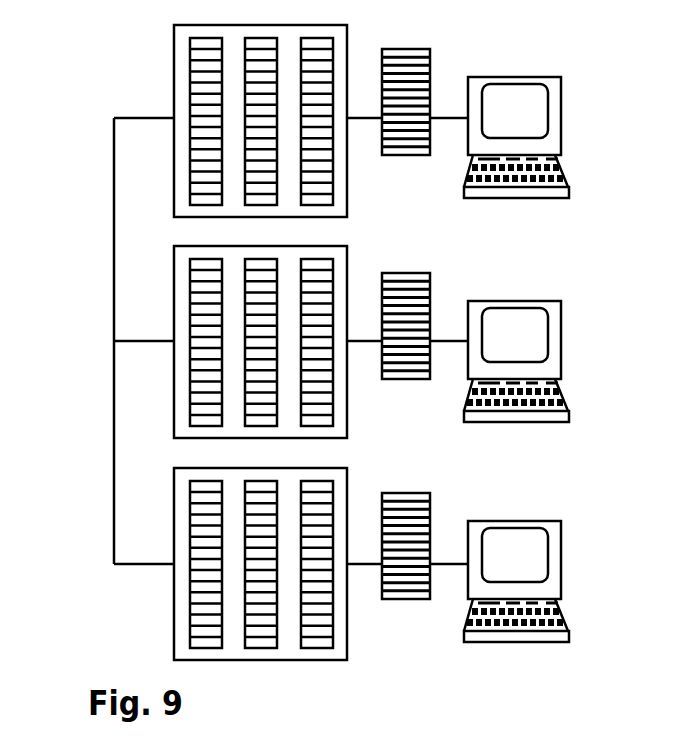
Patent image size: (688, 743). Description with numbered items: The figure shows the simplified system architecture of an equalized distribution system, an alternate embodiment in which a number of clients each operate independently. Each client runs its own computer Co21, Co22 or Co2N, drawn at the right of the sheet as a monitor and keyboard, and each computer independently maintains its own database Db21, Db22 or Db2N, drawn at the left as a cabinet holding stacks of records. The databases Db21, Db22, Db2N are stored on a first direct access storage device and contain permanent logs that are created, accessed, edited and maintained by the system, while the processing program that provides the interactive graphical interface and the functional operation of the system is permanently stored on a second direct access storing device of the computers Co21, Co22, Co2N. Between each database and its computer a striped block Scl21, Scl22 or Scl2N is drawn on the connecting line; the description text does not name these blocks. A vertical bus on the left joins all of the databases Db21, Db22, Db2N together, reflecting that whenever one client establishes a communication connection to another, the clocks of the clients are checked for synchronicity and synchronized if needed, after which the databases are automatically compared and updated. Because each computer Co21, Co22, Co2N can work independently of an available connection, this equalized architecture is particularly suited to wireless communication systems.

The database Db21 is at (174, 155).
The database Db22 is at (174, 397).
The database Db2N is at (175, 623).
The scheduler/selector unit Scl21 is at (430, 65).
The scheduler/selector unit Scl22 is at (430, 289).
The scheduler/selector unit Scl2N is at (430, 509).
The computer Co21 is at (548, 110).
The computer Co22 is at (548, 334).
The computer Co2N is at (548, 554).